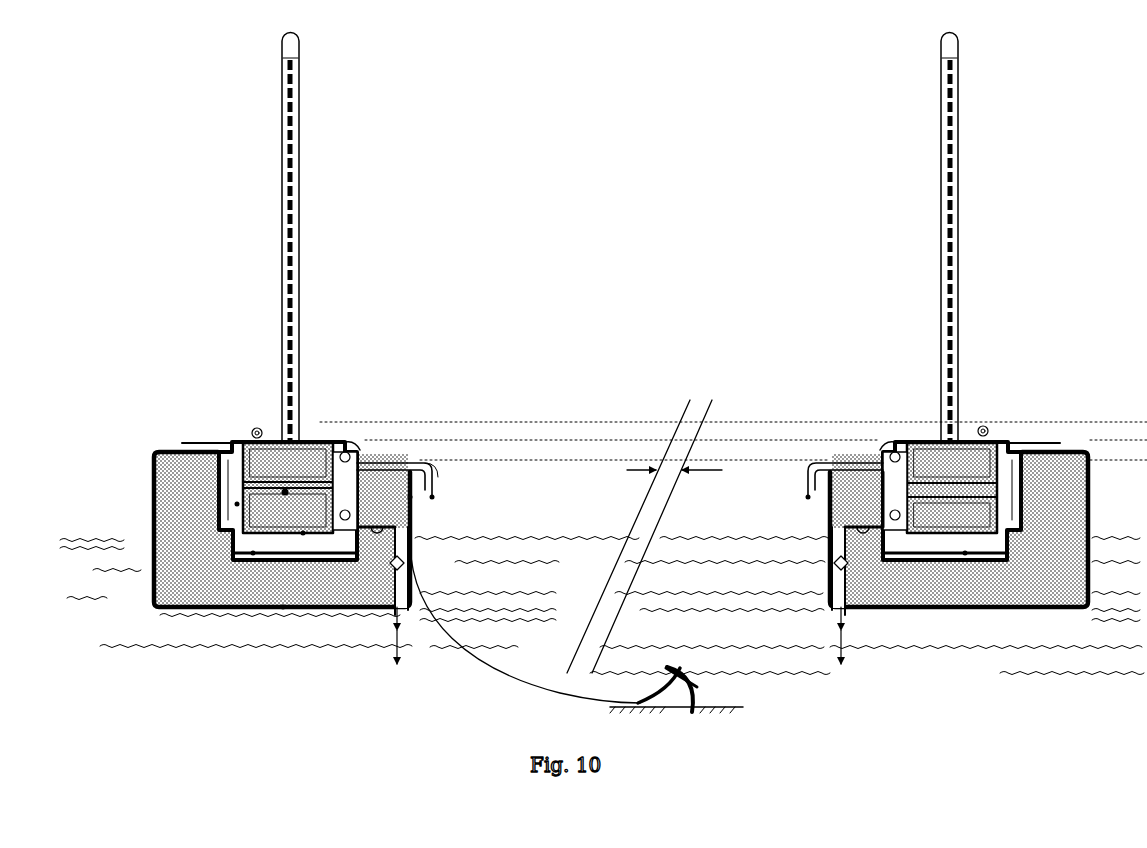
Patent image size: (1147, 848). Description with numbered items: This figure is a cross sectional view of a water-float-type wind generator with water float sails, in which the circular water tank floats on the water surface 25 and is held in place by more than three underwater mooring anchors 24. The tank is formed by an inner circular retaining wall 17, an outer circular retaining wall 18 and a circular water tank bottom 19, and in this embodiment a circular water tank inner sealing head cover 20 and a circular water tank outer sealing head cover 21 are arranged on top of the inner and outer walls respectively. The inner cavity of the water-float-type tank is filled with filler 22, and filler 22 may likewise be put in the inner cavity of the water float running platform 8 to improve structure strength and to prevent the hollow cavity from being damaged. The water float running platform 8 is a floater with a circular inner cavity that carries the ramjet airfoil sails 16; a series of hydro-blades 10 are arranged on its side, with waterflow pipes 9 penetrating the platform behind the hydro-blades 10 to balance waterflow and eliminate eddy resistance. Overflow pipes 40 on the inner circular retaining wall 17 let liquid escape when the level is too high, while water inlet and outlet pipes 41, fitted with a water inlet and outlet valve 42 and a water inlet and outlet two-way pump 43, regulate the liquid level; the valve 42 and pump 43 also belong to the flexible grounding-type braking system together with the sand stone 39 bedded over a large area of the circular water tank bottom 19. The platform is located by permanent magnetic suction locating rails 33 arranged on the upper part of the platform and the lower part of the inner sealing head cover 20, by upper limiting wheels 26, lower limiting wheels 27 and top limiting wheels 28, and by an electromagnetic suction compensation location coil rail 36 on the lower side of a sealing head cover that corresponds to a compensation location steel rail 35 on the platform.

The water float running platform 8 is at (302, 534).
The waterflow pipes 9 is at (237, 505).
The hydro-blades 10 is at (217, 523).
The ramjet airfoil sails 16 is at (280, 272).
The inner circular retaining wall 17 is at (411, 498).
The outer circular retaining wall 18 is at (153, 529).
The circular water tank bottom 19 is at (282, 608).
The circular water tank inner sealing head cover 20 is at (385, 458).
The circular water tank outer sealing head cover 21 is at (212, 440).
The filler 22 is at (167, 492).
The underwater mooring anchors 24 is at (690, 683).
The water surface 25 is at (504, 532).
The upper limiting wheels 26 is at (885, 474).
The lower limiting wheels 27 is at (237, 444).
The top limiting wheels 28 is at (254, 429).
The permanent magnetic suction locating rails 33 is at (273, 440).
The compensation location steel rail 35 is at (372, 448).
The electromagnetic suction compensation location coil rail 36 is at (353, 440).
The sand stone 39 is at (252, 554).
The overflow pipes 40 is at (436, 462).
The water inlet and outlet pipes 41 is at (393, 616).
The water inlet and outlet valve 42 is at (393, 567).
The water inlet and outlet two-way pump 43 is at (376, 538).